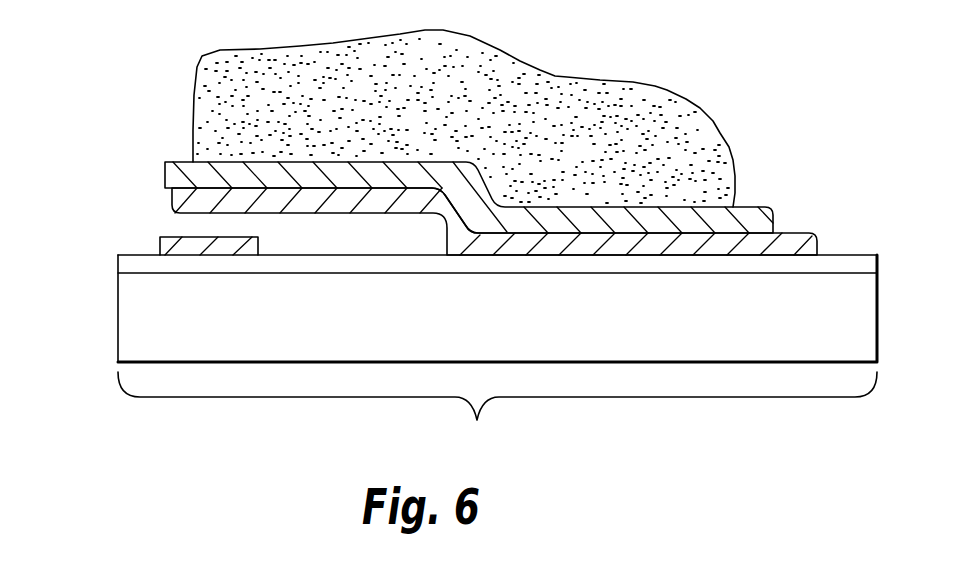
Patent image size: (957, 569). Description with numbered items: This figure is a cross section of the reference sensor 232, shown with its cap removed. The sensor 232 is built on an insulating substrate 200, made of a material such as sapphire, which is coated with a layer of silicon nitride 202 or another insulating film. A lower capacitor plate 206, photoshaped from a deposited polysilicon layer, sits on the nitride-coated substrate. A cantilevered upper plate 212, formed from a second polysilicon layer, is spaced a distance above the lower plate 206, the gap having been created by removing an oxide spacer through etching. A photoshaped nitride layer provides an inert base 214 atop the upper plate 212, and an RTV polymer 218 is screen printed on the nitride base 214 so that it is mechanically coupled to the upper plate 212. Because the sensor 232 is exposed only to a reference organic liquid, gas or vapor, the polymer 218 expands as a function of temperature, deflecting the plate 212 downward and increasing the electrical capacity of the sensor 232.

The insulating substrate 200 is at (137, 318).
The layer of silicon nitride 202 is at (118, 263).
The lower capacitor plate 206 is at (160, 242).
The cantilevered upper plate 212 is at (167, 200).
The inert base 214 is at (172, 162).
The polymer 218 is at (343, 119).
The sensor 232 is at (497, 411).